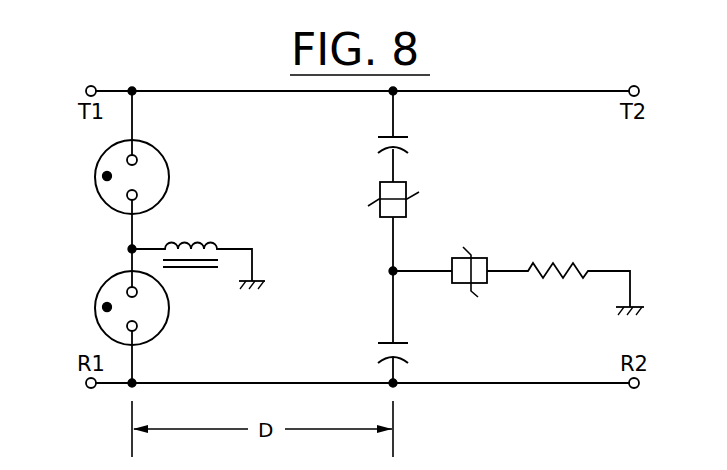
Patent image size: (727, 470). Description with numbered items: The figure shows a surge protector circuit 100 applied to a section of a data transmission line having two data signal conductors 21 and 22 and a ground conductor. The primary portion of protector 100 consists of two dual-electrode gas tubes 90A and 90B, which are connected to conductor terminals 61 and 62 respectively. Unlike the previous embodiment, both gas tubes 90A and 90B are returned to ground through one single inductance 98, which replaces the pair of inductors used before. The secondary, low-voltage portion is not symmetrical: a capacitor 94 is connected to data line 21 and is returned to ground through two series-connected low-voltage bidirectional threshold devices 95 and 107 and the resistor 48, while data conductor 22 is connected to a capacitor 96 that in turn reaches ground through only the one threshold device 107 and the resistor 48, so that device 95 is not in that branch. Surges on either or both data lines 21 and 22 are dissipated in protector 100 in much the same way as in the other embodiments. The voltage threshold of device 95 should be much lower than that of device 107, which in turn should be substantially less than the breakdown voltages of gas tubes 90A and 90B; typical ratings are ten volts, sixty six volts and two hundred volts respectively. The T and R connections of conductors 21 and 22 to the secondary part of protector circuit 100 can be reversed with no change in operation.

The data signal conductor 21 is at (213, 93).
The data signal conductor 22 is at (237, 381).
The conductor terminal 61 is at (134, 93).
The conductor terminal 62 is at (134, 382).
The dual-electrode gas tube 90A is at (107, 204).
The dual-electrode gas tube 90B is at (107, 333).
The inductance 98 is at (200, 243).
The protector circuit 100 is at (319, 182).
The capacitor 94 is at (398, 136).
The low-voltage bidirectional threshold device 95 is at (406, 183).
The capacitor 96 is at (377, 350).
The low-voltage bidirectional threshold device 107 is at (478, 264).
The resistor 48 is at (560, 268).